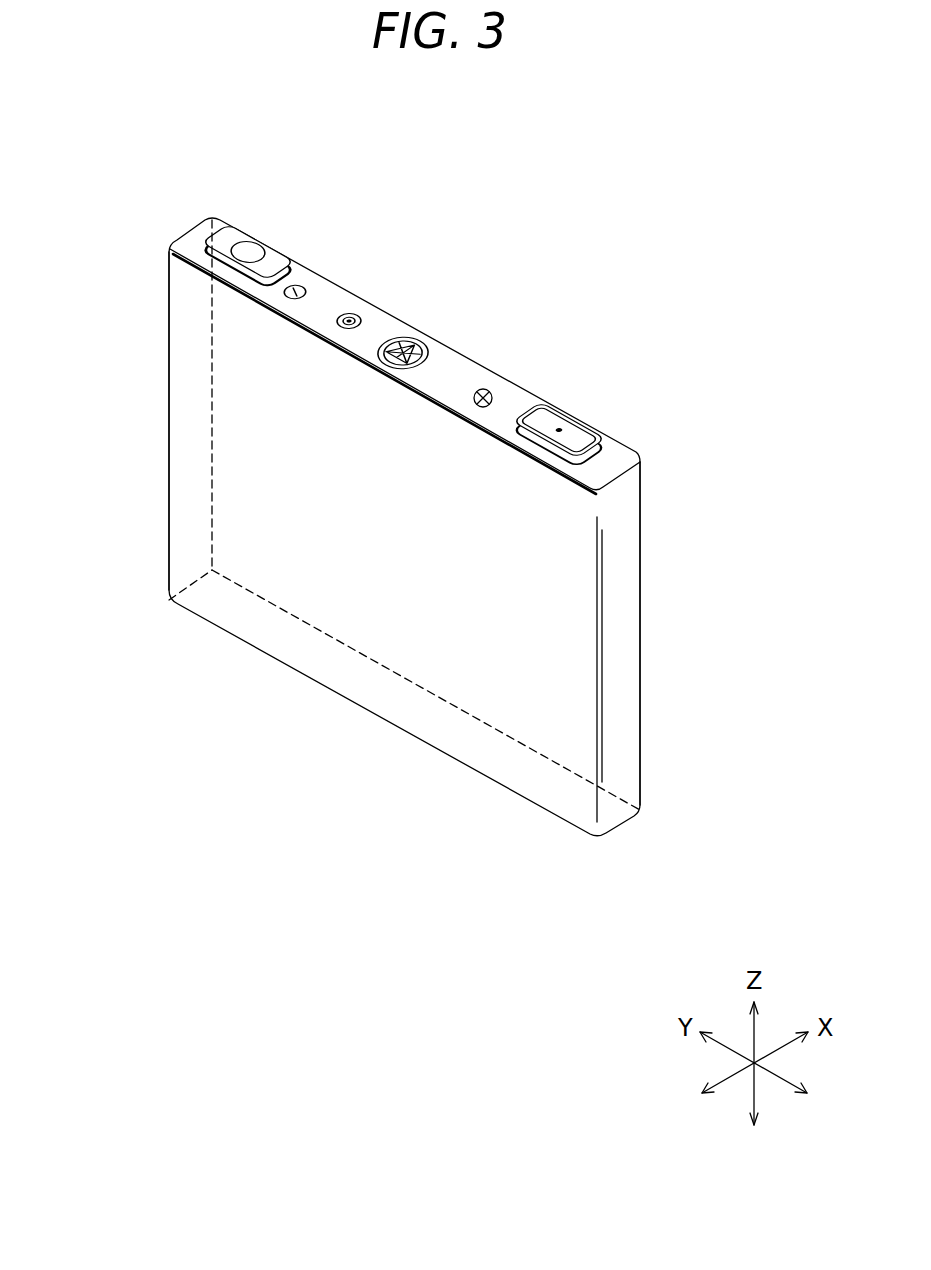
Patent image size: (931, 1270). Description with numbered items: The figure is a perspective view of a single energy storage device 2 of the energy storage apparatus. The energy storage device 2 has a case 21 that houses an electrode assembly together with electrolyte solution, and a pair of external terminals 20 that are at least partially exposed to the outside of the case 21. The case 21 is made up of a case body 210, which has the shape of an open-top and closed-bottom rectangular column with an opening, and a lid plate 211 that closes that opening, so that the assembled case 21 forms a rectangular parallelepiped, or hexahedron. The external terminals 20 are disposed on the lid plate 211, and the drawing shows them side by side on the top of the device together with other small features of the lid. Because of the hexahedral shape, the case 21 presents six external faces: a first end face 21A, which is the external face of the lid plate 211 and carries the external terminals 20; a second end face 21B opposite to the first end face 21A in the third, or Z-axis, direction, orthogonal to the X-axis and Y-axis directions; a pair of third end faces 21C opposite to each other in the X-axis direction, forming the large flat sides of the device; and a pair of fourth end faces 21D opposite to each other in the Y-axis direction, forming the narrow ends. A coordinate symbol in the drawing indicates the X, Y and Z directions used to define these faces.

The energy storage device 2 is at (627, 389).
The external terminals 20 is at (241, 237).
The case 21 is at (484, 535).
The case body 210 is at (628, 509).
The lid plate 211 is at (617, 460).
The first end face 21A is at (323, 302).
The second end face 21B is at (333, 665).
The third end faces 21C is at (526, 571).
The fourth end faces 21D is at (190, 462).